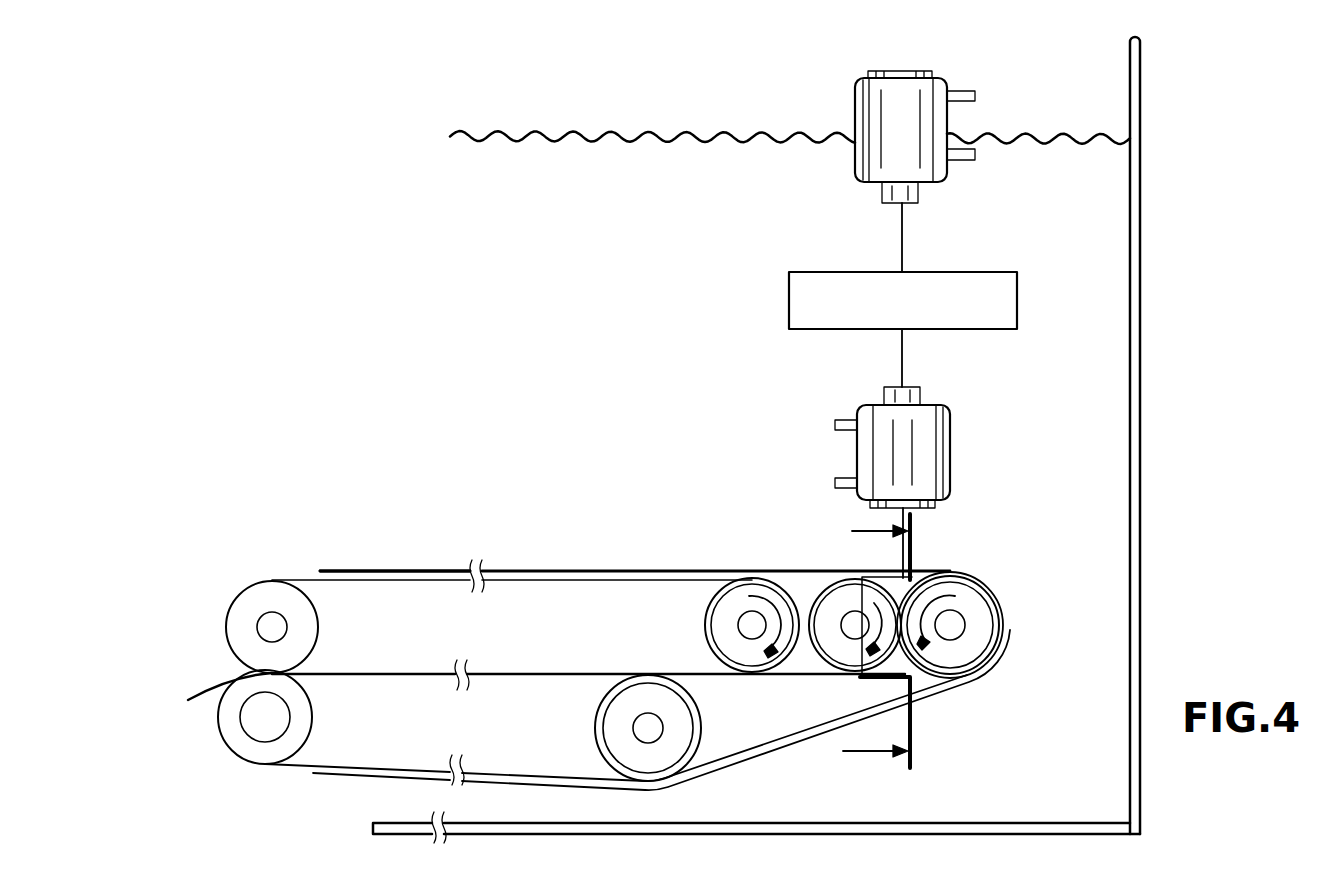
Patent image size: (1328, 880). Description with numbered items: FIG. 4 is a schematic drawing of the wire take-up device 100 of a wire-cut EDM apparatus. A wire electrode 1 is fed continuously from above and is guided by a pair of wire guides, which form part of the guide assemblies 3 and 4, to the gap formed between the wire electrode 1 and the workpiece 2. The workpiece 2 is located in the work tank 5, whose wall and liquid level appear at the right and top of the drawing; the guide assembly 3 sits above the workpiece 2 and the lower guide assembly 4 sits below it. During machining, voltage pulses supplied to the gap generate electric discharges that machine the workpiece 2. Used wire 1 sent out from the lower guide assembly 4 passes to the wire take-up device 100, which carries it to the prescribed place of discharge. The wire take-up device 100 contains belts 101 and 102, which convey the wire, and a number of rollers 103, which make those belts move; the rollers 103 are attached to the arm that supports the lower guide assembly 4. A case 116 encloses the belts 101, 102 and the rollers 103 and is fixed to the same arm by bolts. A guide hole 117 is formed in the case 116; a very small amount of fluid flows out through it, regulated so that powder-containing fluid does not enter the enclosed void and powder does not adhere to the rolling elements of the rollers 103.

The wire electrode 1 is at (902, 227).
The workpiece 2 is at (832, 280).
The guide assembly 3 is at (866, 92).
The lower guide assembly 4 is at (932, 452).
The work tank 5 is at (1135, 78).
The wire take-up device 100 is at (800, 795).
The belt 101 is at (298, 767).
The belt 102 is at (300, 580).
The rollers 103 is at (810, 612).
The case 116 is at (510, 571).
The guide hole 117 is at (900, 577).